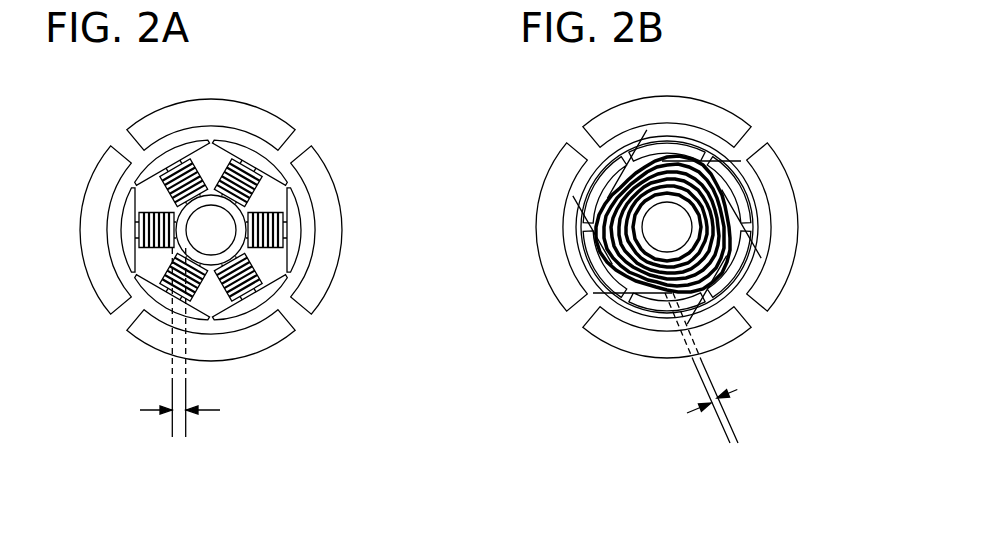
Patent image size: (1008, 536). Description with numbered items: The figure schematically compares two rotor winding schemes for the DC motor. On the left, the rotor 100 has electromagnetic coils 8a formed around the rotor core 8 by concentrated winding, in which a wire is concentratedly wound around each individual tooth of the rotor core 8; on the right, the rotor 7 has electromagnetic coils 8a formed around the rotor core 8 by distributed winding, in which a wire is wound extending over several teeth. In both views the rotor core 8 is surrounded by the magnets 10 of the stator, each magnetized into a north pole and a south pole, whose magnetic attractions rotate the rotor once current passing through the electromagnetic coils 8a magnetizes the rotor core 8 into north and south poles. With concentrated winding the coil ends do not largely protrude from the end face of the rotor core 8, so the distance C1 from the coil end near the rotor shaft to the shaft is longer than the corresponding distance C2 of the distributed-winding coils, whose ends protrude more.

In FIG. 2A, the rotor 100 is at (249, 211).
In FIG. 2B, the rotor 7 is at (711, 222).
In FIG. 2A, the magnets 10 is at (211, 211).
In FIG. 2B, the magnets 10 is at (667, 209).
In FIG. 2A, the rotor core 8 is at (245, 230).
In FIG. 2B, the rotor core 8 is at (687, 227).
In FIG. 2A, the electromagnetic coils 8a is at (160, 240).
In FIG. 2B, the electromagnetic coils 8a is at (633, 292).
In FIG. 2A, the distance C1 is at (180, 357).
In FIG. 2B, the distance C2 is at (716, 368).